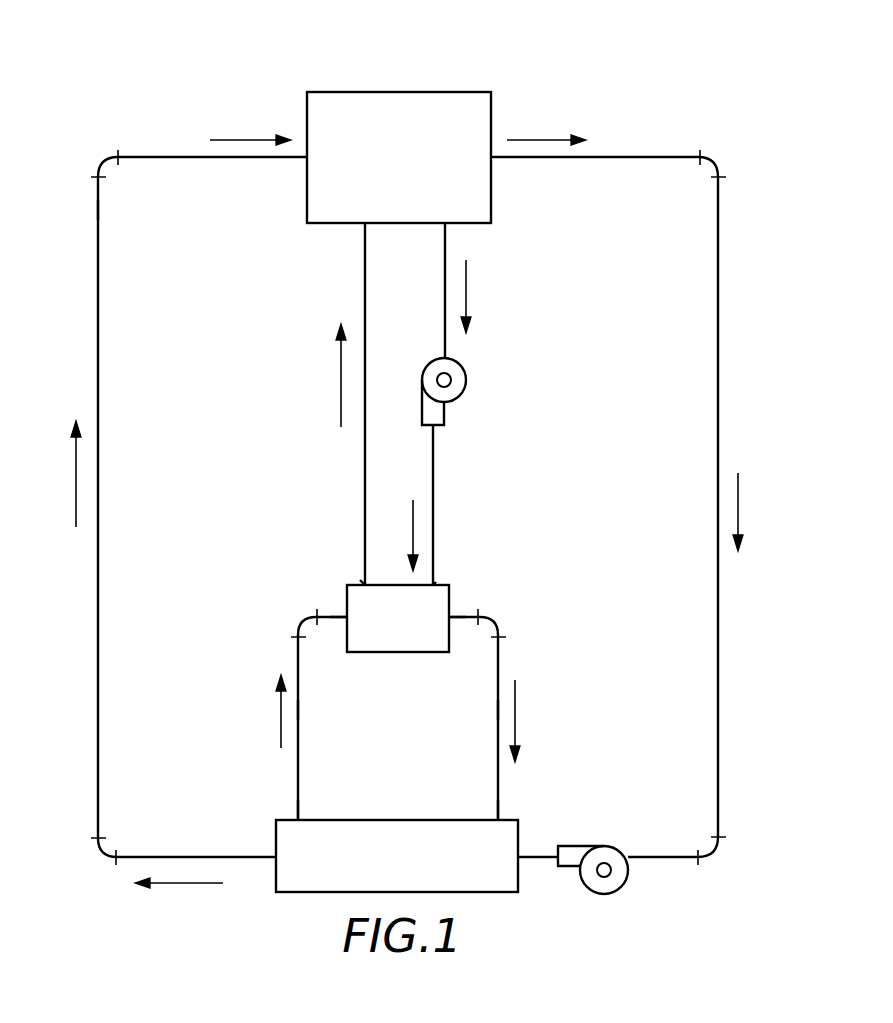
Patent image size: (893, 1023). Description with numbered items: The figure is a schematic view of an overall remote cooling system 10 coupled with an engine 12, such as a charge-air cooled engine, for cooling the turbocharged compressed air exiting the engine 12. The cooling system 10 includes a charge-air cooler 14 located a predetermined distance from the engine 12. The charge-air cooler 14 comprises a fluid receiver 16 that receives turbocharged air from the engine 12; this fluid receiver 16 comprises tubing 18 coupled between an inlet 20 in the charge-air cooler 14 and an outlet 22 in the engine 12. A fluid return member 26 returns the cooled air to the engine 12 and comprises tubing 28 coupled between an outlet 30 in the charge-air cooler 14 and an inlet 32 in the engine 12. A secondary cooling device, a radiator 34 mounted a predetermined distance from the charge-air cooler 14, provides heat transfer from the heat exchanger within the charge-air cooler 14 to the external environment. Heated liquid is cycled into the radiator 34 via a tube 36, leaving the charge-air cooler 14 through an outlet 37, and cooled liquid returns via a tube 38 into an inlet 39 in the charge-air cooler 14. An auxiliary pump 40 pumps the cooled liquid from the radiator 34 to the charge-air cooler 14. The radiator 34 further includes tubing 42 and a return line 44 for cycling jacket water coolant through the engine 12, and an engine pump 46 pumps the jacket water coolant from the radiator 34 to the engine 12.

The remote cooling system 10 is at (95, 120).
The engine 12 is at (302, 893).
The charge-air cooler 14 is at (347, 594).
The fluid receiver 16 is at (250, 651).
The tubing 18 is at (298, 723).
The inlet 20 is at (343, 620).
The outlet 22 is at (297, 818).
The fluid return member 26 is at (529, 603).
The tubing 28 is at (497, 723).
The outlet 30 is at (452, 620).
The inlet 32 is at (497, 818).
The radiator 34 is at (491, 103).
The tube 36 is at (365, 283).
The outlet 37 is at (363, 583).
The tube 38 is at (433, 497).
The inlet 39 is at (437, 583).
The auxiliary pump 40 is at (466, 378).
The tubing 42 is at (98, 272).
The right coolant conduit 44 is at (718, 614).
The engine pump 46 is at (618, 888).